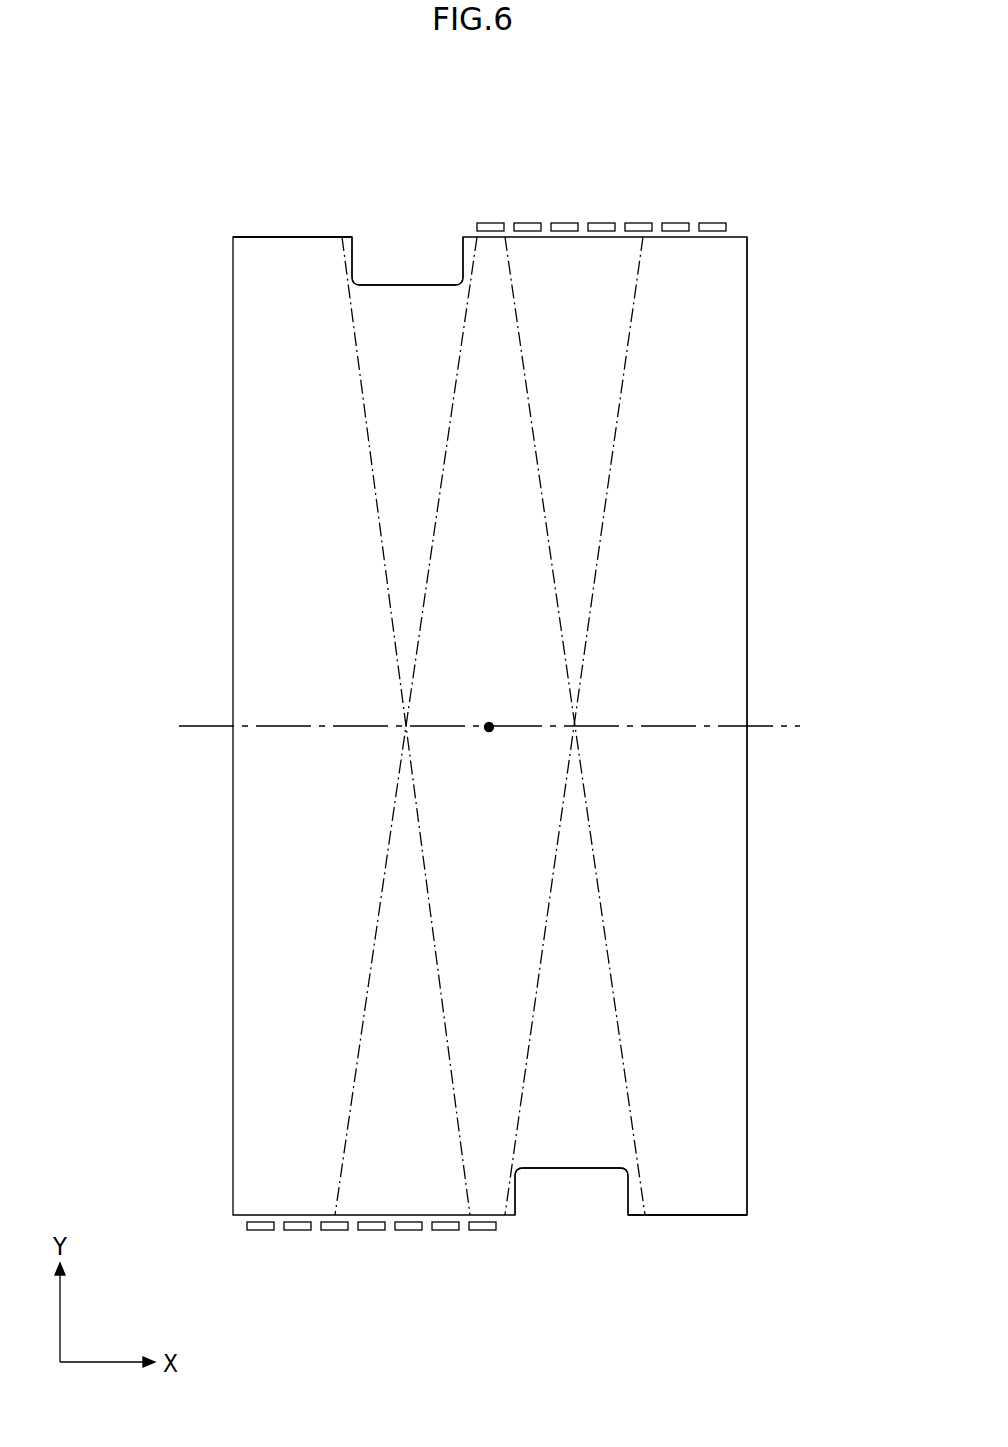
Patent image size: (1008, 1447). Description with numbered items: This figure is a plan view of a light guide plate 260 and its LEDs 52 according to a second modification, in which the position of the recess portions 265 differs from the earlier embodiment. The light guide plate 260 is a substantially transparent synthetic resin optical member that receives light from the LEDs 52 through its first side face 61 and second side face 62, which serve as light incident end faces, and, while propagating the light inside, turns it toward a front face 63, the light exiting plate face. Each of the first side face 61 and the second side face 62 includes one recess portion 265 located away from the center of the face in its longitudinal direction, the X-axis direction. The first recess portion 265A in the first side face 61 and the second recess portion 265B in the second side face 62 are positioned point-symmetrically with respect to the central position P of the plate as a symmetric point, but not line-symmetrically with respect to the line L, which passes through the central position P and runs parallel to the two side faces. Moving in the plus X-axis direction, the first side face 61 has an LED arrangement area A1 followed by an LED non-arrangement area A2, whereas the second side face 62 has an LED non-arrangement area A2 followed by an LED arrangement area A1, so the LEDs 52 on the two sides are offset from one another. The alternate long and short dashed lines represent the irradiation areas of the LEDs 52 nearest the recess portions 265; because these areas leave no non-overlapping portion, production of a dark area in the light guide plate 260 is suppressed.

The light guide plate 260 is at (772, 413).
The recess portion 265 is at (490, 741).
The first recess portion 265A is at (572, 1168).
The second recess portion 265B is at (415, 285).
The second side face 62 is at (342, 237).
The first side face 61 is at (667, 1215).
The front face 63 is at (728, 607).
The LEDs 52 is at (310, 1228).
The LED arrangement area A1 is at (745, 237).
The LED non-arrangement area A2 is at (280, 237).
The line L is at (478, 734).
The central position P is at (482, 713).